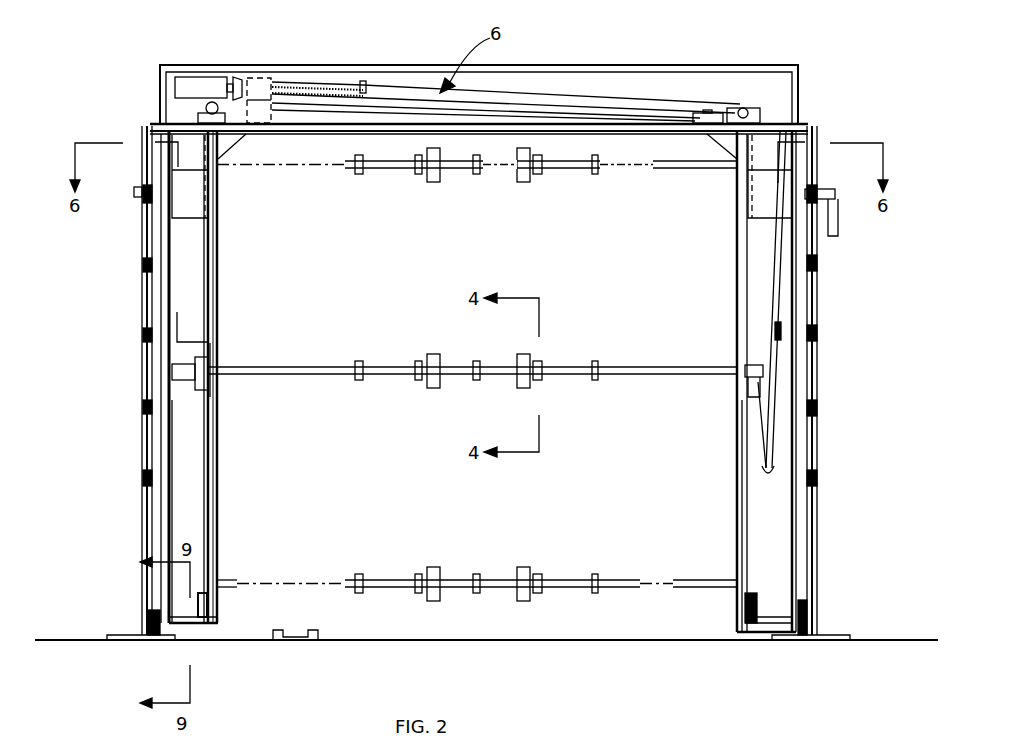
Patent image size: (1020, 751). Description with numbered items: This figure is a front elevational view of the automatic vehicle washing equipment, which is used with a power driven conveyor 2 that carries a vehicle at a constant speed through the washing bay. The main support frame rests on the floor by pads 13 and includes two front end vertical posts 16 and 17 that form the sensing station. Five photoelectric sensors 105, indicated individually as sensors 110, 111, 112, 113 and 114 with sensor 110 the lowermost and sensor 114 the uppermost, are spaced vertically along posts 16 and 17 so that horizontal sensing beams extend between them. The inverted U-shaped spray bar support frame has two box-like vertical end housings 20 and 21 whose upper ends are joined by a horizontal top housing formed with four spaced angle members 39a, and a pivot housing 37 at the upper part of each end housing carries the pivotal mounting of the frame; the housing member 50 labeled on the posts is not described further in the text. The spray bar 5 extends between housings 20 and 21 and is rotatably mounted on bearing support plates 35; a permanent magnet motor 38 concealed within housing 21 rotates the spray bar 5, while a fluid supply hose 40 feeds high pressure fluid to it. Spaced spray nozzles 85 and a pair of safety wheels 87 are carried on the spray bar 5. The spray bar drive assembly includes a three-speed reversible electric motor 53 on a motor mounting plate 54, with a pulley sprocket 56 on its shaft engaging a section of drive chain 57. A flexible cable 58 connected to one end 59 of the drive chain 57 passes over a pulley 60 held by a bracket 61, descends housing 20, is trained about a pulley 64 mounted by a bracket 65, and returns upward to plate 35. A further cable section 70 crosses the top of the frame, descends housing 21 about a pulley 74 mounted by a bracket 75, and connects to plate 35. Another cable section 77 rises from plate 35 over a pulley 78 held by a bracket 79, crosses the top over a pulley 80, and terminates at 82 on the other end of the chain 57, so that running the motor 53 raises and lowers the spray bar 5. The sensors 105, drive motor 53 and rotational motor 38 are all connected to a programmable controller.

The power driven conveyor 2 is at (293, 643).
The spray bar 5 is at (350, 180).
The pads 13 is at (118, 634).
The front end vertical post 16 is at (812, 580).
The front end vertical post 17 is at (147, 520).
The vertically extending end housing 20 is at (724, 456).
The vertically extending end housing 21 is at (228, 500).
The bearing support plate 35 is at (210, 345).
The pivot housing 37 is at (170, 220).
The permanent magnet motor 38 is at (172, 368).
The angle members 39a is at (513, 72).
The fluid supply hose 40 is at (785, 297).
The post channel 50 is at (225, 550).
The three-speed reversible electric motor 53 is at (196, 78).
The motor mounting plate 54 is at (262, 115).
The pulley sprocket 56 is at (262, 76).
The drive chain 57 is at (306, 84).
The flexible cable 58 is at (549, 93).
The end of drive chain 59 is at (367, 85).
The pulley 60 is at (745, 108).
The bracket 61 is at (760, 115).
The pulley 64 is at (748, 603).
The bracket 65 is at (747, 617).
The flexible cable section 70 is at (217, 462).
The pulley 74 is at (210, 603).
The bracket 75 is at (193, 622).
The flexible cable section 77 is at (212, 265).
The pulley 78 is at (205, 108).
The bracket 79 is at (200, 118).
The pulley 80 is at (705, 112).
The cable termination 82 is at (362, 100).
The spray nozzles 85 is at (595, 175).
The safety wheels 87 is at (520, 185).
The sensors 105 is at (130, 418).
The sensor 110 is at (817, 478).
The sensor 111 is at (818, 408).
The sensor 112 is at (818, 335).
The sensor 113 is at (818, 262).
The sensor 114 is at (817, 190).